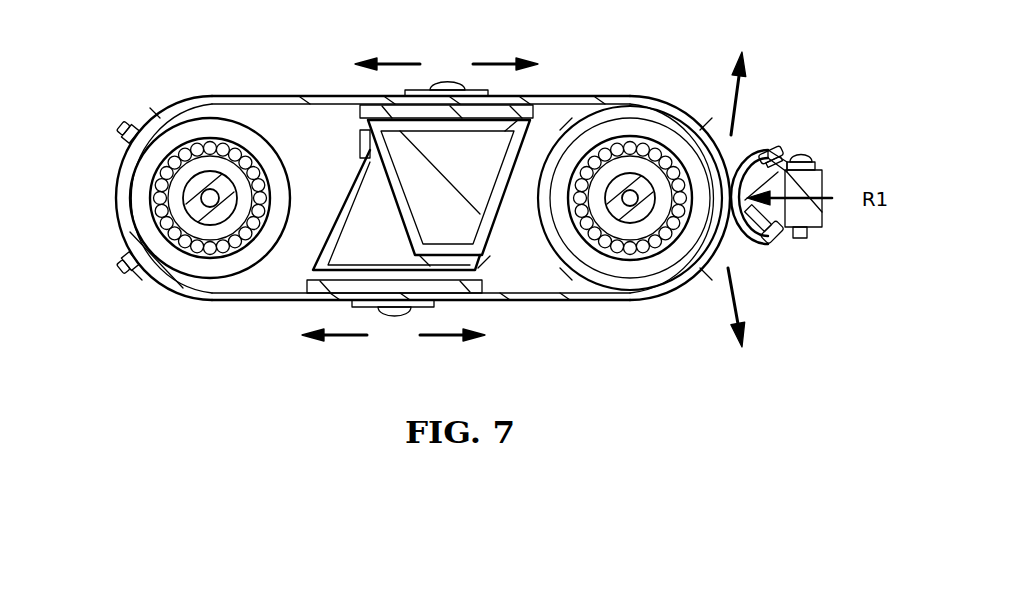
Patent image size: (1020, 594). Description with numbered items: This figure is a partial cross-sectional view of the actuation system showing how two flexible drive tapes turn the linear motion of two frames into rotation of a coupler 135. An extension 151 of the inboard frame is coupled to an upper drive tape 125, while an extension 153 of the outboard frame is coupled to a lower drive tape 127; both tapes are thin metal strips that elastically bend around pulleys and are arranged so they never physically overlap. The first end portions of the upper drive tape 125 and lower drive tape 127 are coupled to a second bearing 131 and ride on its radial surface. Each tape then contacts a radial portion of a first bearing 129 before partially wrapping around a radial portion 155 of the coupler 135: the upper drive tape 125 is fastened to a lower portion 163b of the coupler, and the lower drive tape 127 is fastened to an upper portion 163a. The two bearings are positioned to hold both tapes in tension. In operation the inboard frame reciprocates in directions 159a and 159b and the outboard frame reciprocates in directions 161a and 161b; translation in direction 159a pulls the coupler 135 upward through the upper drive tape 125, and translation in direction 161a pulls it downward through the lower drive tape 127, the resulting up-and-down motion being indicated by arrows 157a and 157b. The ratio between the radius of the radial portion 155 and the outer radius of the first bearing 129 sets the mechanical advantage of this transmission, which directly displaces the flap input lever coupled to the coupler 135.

The upper drive tape 125 is at (212, 96).
The lower drive tape 127 is at (237, 302).
The first bearing 129 is at (575, 112).
The second bearing 131 is at (115, 200).
The coupler 135 is at (825, 175).
The extension of inboard frame 151 is at (338, 108).
The extension of outboard frame 153 is at (487, 290).
The radial portion of coupler 155 is at (716, 280).
The upward movement arrow 157a is at (730, 88).
The downward movement arrow 157b is at (731, 310).
The direction of inboard frame translation 159a is at (398, 60).
The direction of inboard frame translation 159b is at (497, 60).
The direction of outboard frame translation 161a is at (345, 340).
The direction of outboard frame translation 161b is at (443, 340).
The upper portion of coupler 163a is at (762, 147).
The lower portion of coupler 163b is at (770, 250).